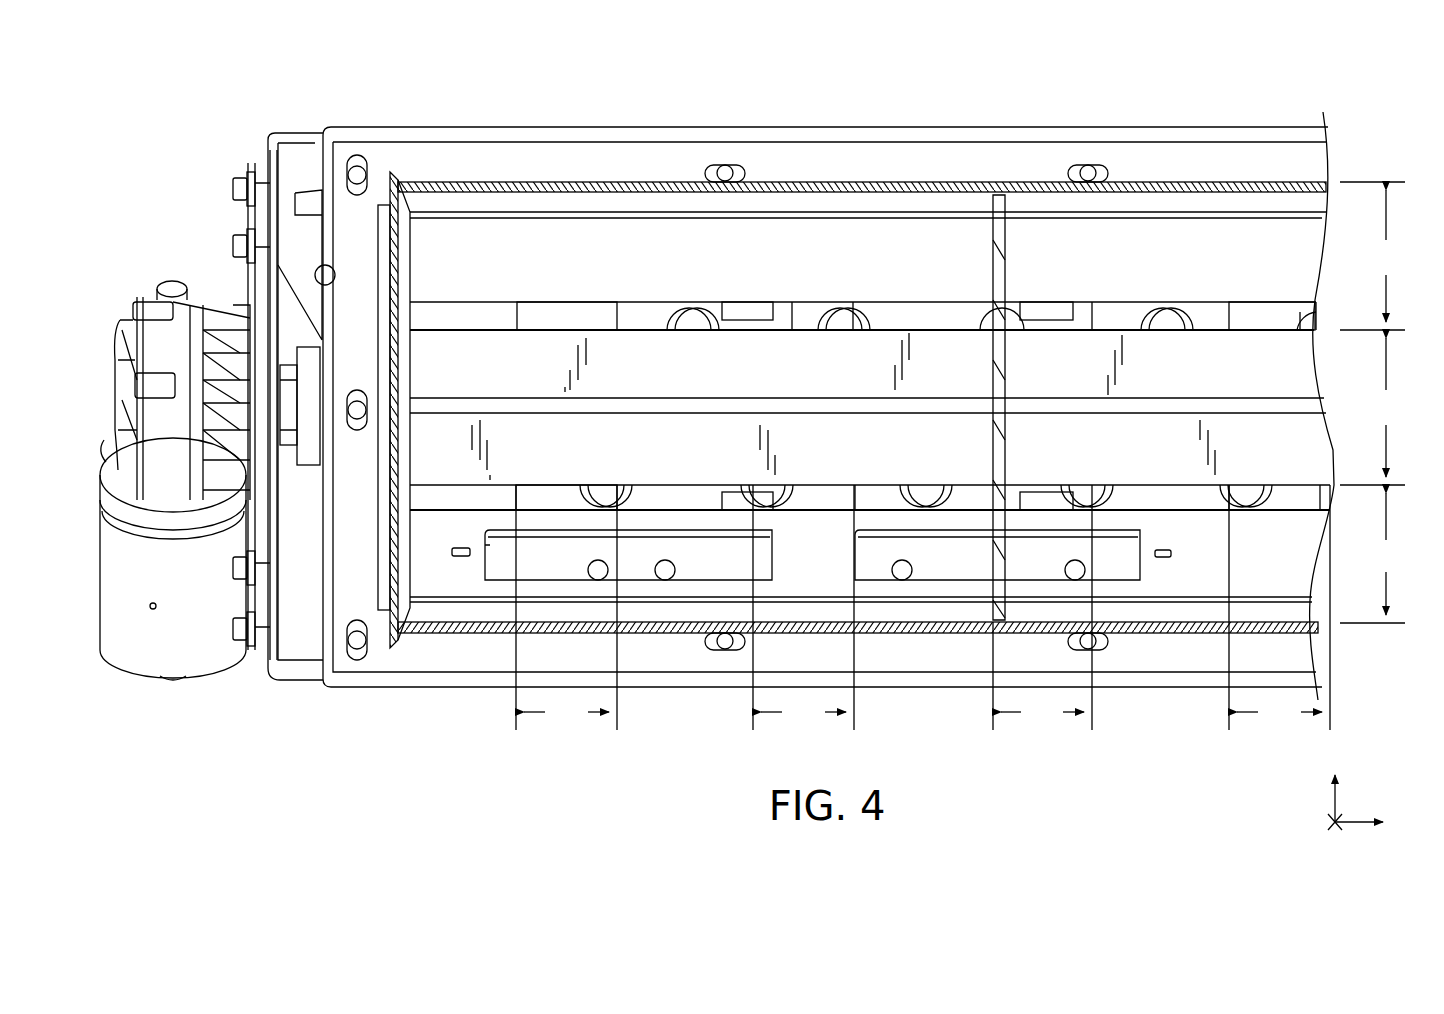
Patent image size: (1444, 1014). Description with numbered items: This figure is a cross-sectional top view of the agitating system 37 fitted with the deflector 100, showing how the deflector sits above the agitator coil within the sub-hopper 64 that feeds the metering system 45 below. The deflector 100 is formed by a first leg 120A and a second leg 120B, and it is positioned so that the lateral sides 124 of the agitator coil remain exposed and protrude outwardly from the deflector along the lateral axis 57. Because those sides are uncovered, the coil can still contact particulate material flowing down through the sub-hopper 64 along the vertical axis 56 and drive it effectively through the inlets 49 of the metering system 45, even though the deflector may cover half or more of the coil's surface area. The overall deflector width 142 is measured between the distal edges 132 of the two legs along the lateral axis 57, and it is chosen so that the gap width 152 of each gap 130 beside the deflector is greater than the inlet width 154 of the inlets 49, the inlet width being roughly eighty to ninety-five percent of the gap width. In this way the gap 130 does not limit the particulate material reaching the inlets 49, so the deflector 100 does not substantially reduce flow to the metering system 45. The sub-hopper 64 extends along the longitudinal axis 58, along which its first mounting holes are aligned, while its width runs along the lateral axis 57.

The agitating system 37 is at (1360, 130).
The gap 130 is at (538, 252).
The inlet 49 is at (592, 313).
The lateral sides 124 is at (683, 318).
The metering system 45 is at (890, 325).
The deflector 100 is at (557, 448).
The second leg 120B is at (1200, 350).
The first leg 120A is at (1282, 472).
The distal edge 132 is at (1300, 330).
The gap width 152 is at (1373, 402).
The deflector width 142 is at (1373, 411).
The inlet width 154 is at (923, 607).
The sub-hopper 64 is at (450, 655).
The vertical axis 56 is at (1333, 822).
The lateral axis 57 is at (1332, 804).
The longitudinal axis 58 is at (1355, 826).